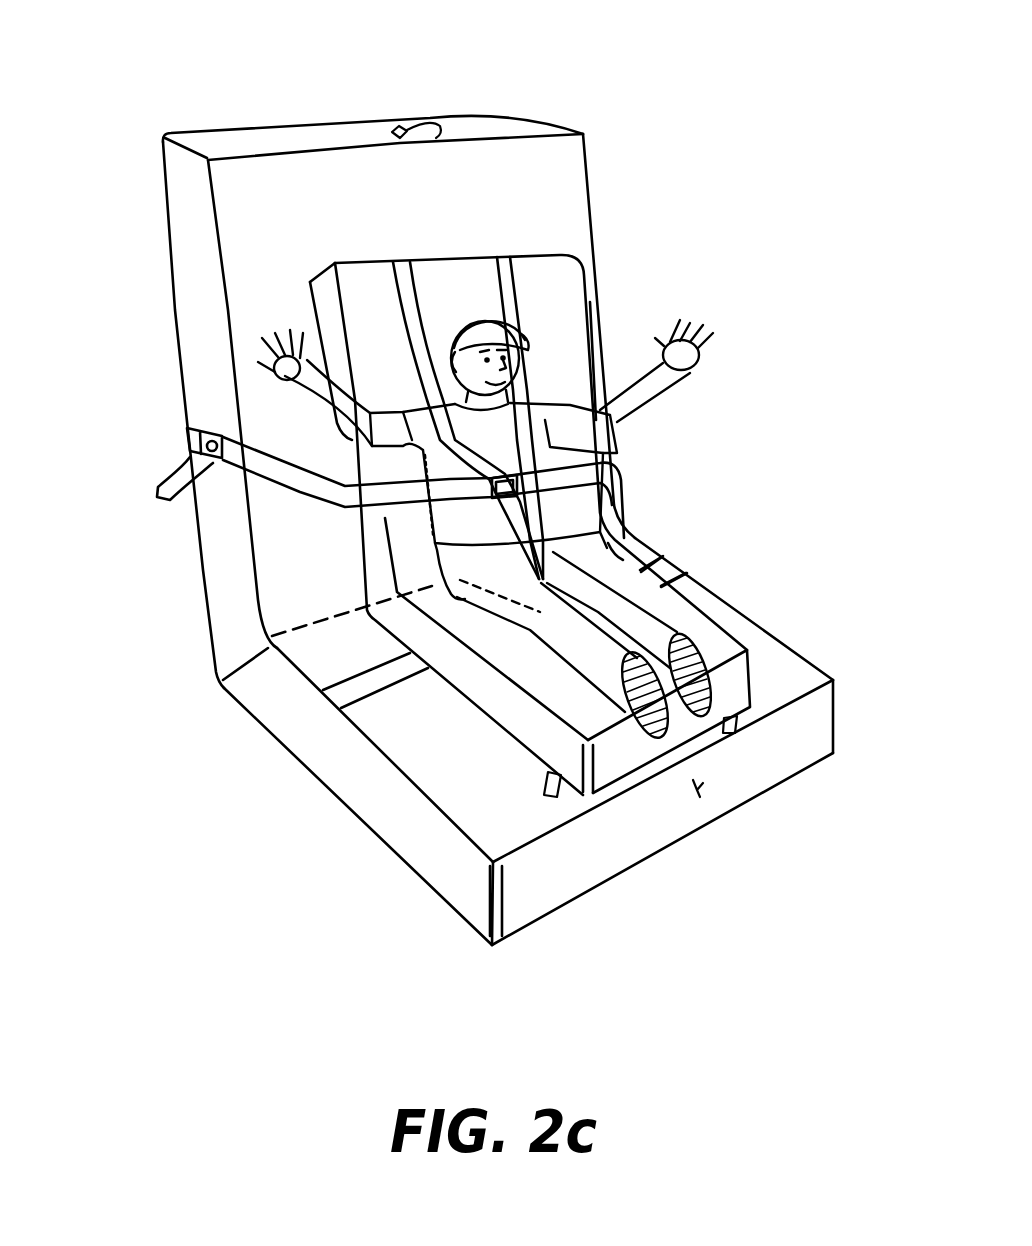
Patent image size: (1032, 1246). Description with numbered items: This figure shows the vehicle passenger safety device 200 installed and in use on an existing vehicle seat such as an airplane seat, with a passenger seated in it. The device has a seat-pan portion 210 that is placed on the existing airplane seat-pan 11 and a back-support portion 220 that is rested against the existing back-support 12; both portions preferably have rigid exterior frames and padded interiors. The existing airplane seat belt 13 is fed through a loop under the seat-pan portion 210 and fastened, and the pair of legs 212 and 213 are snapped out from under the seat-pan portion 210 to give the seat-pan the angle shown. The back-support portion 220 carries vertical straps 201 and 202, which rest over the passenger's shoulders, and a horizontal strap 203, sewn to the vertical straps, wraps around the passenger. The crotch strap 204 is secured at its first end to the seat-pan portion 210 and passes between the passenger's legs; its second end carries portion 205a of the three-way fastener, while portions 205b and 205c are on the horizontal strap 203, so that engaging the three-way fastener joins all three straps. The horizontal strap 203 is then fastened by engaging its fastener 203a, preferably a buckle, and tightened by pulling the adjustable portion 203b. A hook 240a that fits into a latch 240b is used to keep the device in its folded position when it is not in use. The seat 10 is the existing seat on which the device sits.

The seat base 10 is at (421, 857).
The existing airplane seat-pan 11 is at (835, 680).
The existing back-support 12 is at (590, 134).
The existing airplane seat belt 13 is at (334, 700).
The vehicle passenger safety device 200 is at (566, 262).
The vertical strap 201 is at (400, 260).
The vertical strap 202 is at (502, 257).
The horizontal strap 203 is at (373, 507).
The fastener 203a is at (185, 438).
The adjustable portion 203b is at (170, 502).
The crotch strap 204 is at (627, 530).
The portion of three-way fastener 205a is at (614, 512).
The portion of three-way fastener 205b is at (722, 498).
The portion of three-way fastener 205c is at (726, 518).
The seat-pan portion 210 is at (760, 627).
The leg 212 is at (552, 800).
The leg 213 is at (737, 724).
The back-support portion 220 is at (590, 302).
The hook 240a is at (400, 127).
The latch 240b is at (697, 788).